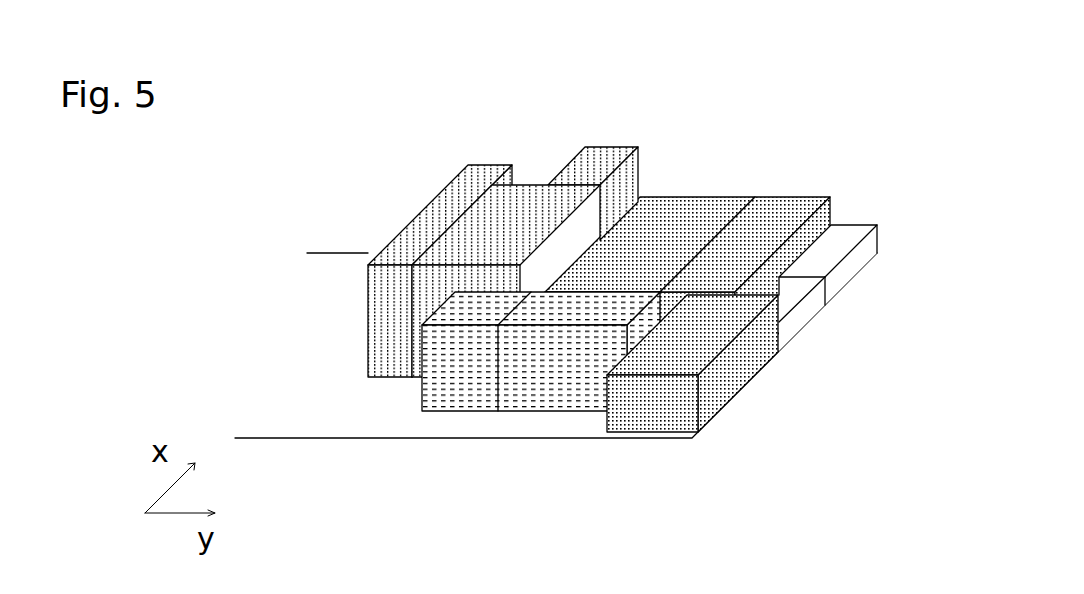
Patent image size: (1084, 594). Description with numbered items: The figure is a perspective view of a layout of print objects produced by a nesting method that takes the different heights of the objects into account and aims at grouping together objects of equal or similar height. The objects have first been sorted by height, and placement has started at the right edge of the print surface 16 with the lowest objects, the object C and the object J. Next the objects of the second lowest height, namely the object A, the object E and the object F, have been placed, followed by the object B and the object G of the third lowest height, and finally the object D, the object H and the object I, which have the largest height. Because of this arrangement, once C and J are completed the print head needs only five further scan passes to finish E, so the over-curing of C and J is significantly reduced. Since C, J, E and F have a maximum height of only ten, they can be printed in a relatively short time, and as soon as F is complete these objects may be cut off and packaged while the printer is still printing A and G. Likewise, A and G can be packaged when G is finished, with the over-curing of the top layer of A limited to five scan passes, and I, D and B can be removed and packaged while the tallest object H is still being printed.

The print surface 16 is at (330, 278).
The print object G is at (576, 412).
The print object A is at (682, 215).
The print object B is at (468, 382).
The print object C is at (853, 257).
The print object D is at (532, 202).
The print object E is at (723, 377).
The print object F is at (782, 215).
The print object H is at (475, 172).
The print object I is at (607, 163).
The print object J is at (793, 318).